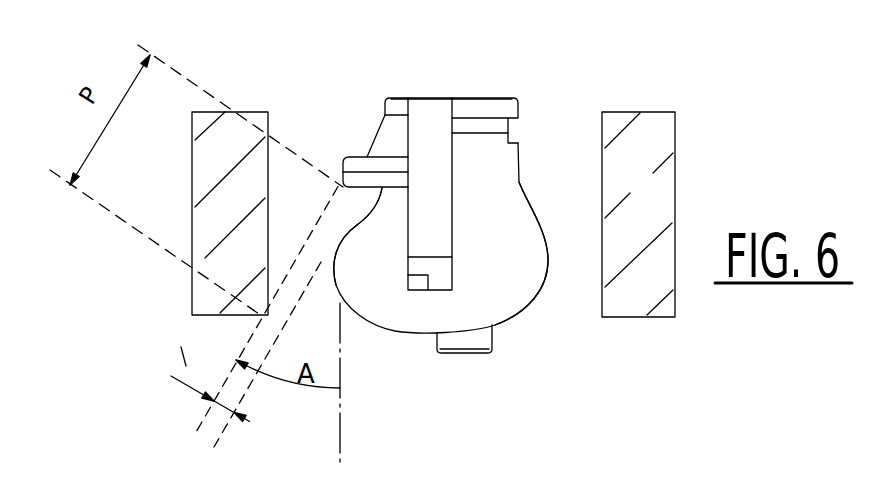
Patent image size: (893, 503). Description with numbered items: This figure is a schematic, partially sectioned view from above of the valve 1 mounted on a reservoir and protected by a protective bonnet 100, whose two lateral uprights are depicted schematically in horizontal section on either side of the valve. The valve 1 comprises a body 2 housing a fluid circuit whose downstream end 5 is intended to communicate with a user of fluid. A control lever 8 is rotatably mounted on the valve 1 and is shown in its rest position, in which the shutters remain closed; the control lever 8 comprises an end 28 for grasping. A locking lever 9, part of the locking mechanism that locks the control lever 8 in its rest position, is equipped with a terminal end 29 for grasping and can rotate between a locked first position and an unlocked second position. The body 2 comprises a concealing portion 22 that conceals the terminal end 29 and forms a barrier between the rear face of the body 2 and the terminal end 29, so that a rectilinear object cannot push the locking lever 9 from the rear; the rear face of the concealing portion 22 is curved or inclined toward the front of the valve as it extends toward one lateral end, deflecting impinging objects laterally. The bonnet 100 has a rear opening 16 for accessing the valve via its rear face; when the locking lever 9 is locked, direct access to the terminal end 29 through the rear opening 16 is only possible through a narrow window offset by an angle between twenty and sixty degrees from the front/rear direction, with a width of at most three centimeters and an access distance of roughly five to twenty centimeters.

The valve 1 is at (560, 133).
The body 2 is at (523, 297).
The downstream end 5 is at (476, 360).
The control lever 8 is at (443, 112).
The locking lever 9 is at (368, 155).
The rear opening 16 is at (576, 306).
The concealing portion 22 is at (355, 327).
The end for grasping 28 is at (424, 90).
The terminal end for grasping 29 is at (400, 85).
The protective bonnet 100 is at (204, 206).